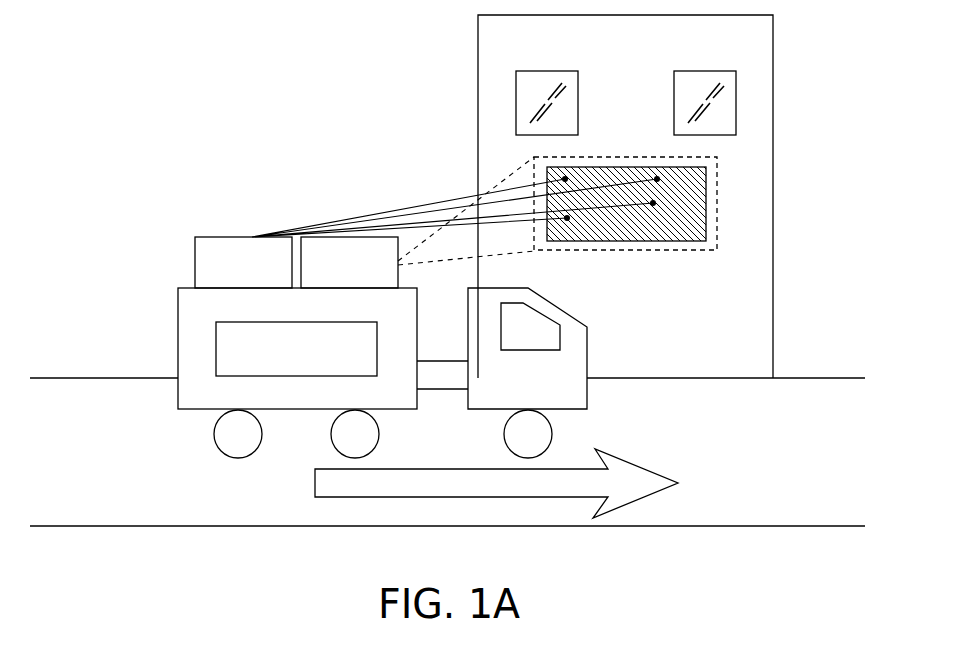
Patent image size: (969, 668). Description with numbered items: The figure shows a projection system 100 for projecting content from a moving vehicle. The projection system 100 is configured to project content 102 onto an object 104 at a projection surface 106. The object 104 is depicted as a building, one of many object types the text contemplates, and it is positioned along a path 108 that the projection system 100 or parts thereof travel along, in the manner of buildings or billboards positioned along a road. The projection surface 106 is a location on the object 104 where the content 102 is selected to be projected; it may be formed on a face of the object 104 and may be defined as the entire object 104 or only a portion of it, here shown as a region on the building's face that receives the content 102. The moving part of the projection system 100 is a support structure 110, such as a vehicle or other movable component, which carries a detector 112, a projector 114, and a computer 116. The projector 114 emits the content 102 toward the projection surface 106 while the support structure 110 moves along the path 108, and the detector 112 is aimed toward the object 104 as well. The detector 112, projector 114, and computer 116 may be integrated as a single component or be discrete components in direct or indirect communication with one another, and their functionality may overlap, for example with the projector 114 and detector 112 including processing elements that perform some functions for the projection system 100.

The projection system 100 is at (249, 50).
The content 102 is at (706, 181).
The object 104 is at (773, 112).
The projection surface 106 is at (712, 226).
The path 108 is at (767, 400).
The support structure 110 is at (183, 317).
The detector 112 is at (240, 243).
The projector 114 is at (352, 243).
The computer 116 is at (228, 365).